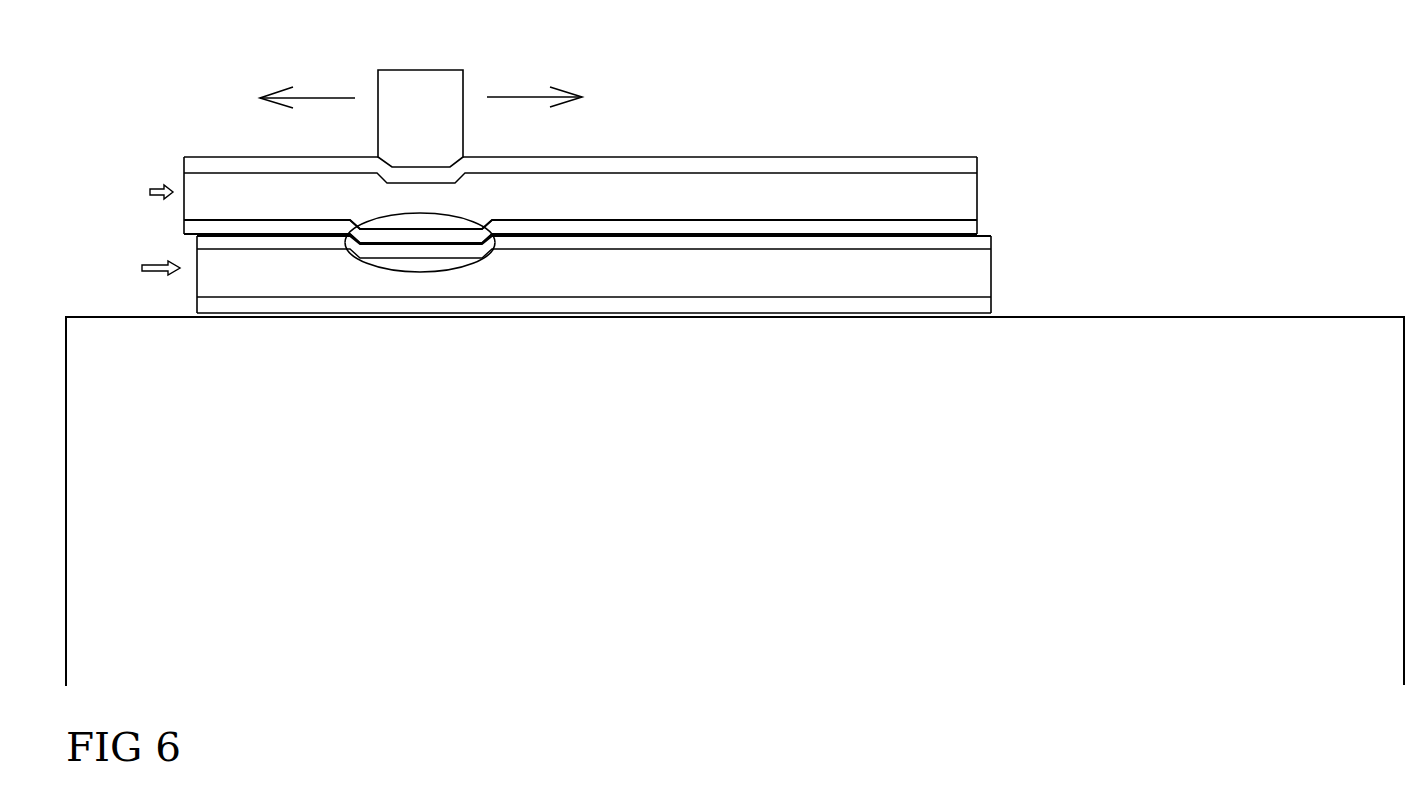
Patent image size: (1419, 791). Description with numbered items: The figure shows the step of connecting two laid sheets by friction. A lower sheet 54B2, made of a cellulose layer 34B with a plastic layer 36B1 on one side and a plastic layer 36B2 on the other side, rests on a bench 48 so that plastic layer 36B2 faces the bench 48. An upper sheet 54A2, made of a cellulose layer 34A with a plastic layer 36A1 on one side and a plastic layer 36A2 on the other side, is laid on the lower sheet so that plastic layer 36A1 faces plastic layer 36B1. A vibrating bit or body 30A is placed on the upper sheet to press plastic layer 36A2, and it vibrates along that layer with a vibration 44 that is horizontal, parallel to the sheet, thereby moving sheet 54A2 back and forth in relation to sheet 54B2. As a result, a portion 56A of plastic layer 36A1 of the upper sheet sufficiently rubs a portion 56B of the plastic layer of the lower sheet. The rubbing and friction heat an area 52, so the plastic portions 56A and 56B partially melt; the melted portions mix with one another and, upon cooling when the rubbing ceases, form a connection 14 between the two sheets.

The connection 14 is at (418, 243).
The vibrating body 30A is at (447, 133).
The cellulose layer 34A is at (736, 190).
The cellulose layer 34B is at (692, 273).
The plastic layer 36A1 is at (797, 222).
The plastic layer 36A2 is at (633, 162).
The plastic layer 36B1 is at (768, 244).
The plastic layer 36B2 is at (615, 303).
The vibration 44 is at (421, 83).
The bench 48 is at (383, 463).
The area heated by rubbing and friction 52 is at (404, 216).
The sheet 54A2 is at (128, 192).
The sheet 54B2 is at (128, 269).
The rubbed portion 56A is at (432, 235).
The rubbed portion 56B is at (432, 252).